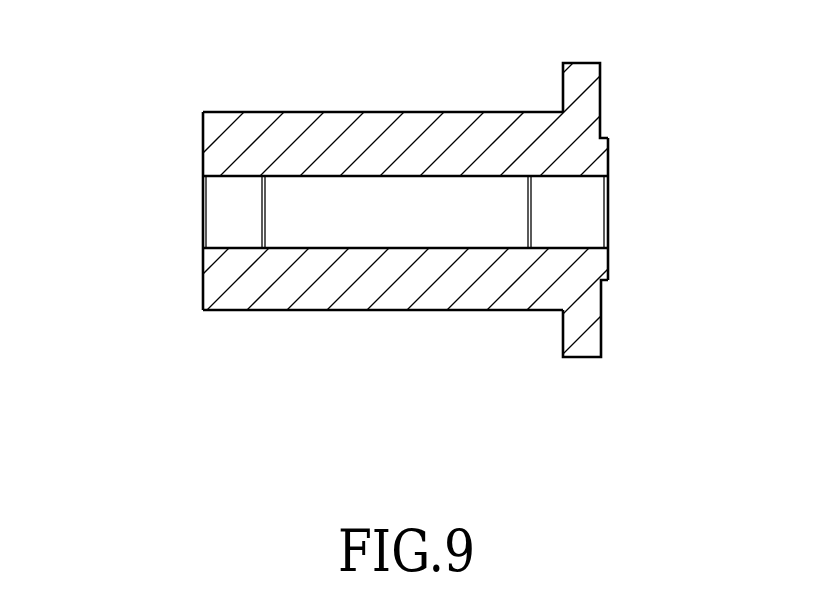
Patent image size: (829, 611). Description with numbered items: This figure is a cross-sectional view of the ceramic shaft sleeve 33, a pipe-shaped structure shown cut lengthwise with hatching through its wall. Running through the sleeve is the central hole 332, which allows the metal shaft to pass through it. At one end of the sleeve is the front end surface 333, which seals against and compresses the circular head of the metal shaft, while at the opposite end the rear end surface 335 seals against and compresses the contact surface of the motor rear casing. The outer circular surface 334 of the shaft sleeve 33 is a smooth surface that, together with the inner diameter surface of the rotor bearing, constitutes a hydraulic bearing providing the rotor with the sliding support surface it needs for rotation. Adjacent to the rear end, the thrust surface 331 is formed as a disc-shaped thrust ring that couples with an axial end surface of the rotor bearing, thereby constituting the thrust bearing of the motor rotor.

The ceramic shaft sleeve 33 is at (405, 226).
The thrust surface 331 is at (562, 339).
The central hole 332 is at (584, 220).
The front end surface 333 is at (201, 285).
The circular surface 334 is at (334, 112).
The rear end surface 335 is at (610, 267).